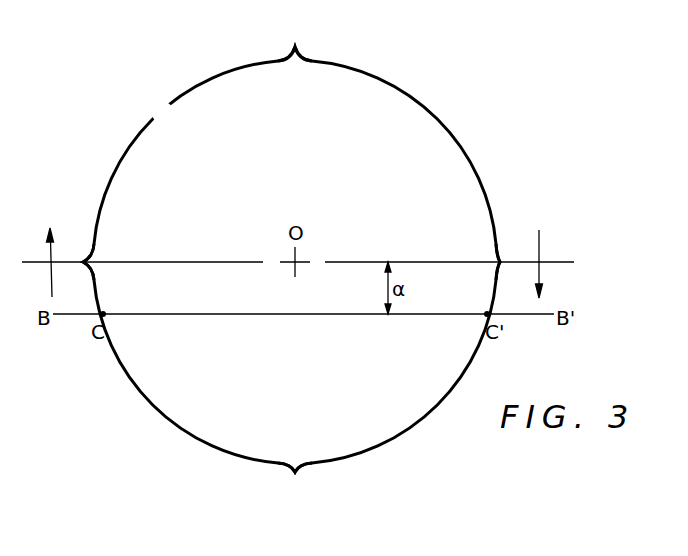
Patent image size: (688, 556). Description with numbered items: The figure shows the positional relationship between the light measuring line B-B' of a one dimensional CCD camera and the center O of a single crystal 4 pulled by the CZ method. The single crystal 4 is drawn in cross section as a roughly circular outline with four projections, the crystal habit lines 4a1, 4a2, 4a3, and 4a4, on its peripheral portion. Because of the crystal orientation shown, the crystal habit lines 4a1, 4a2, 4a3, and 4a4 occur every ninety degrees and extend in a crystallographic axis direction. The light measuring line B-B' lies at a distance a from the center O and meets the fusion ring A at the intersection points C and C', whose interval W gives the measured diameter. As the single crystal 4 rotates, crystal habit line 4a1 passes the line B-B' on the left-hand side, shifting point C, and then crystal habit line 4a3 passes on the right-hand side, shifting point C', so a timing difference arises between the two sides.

The single crystal 4 is at (430, 109).
The crystal habit line 4a1 is at (92, 253).
The crystal habit line 4a2 is at (299, 56).
The crystal habit line 4a3 is at (498, 257).
The crystal habit line 4a4 is at (300, 466).